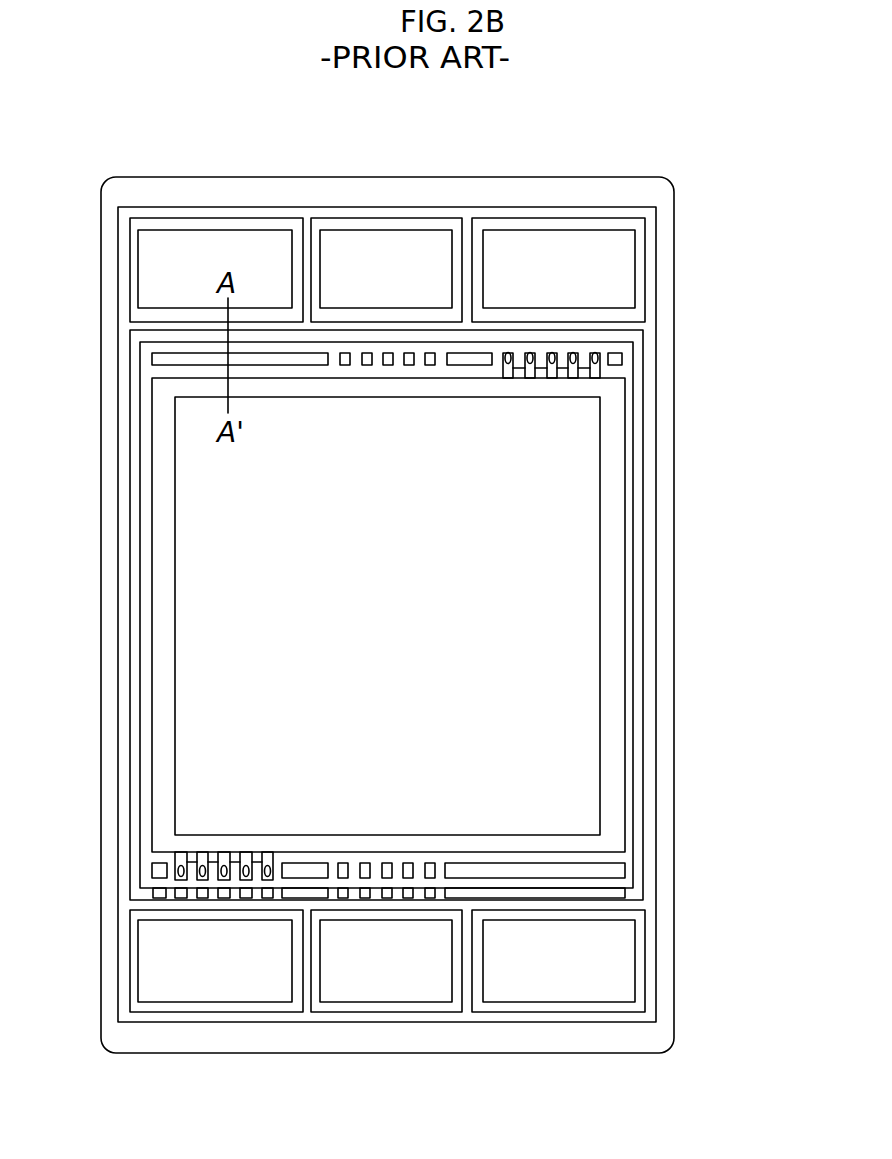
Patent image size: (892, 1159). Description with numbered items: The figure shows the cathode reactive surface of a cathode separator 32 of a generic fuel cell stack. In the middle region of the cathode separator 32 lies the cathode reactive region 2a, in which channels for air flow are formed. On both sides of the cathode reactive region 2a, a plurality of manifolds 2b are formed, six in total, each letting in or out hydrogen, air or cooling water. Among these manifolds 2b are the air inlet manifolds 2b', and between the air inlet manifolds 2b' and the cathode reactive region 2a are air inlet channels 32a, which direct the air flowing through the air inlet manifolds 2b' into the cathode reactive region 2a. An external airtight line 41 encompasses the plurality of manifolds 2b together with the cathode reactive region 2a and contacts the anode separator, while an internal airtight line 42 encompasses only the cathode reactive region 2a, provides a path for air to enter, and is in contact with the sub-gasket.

The cathode separator 32 is at (228, 133).
The external airtight line 41 is at (655, 433).
The internal airtight line 42 is at (633, 518).
The cathode reactive region 2a is at (600, 613).
The manifolds 2b is at (478, 615).
The air inlet manifolds 2b' is at (558, 211).
The air inlet channels 32a is at (575, 357).